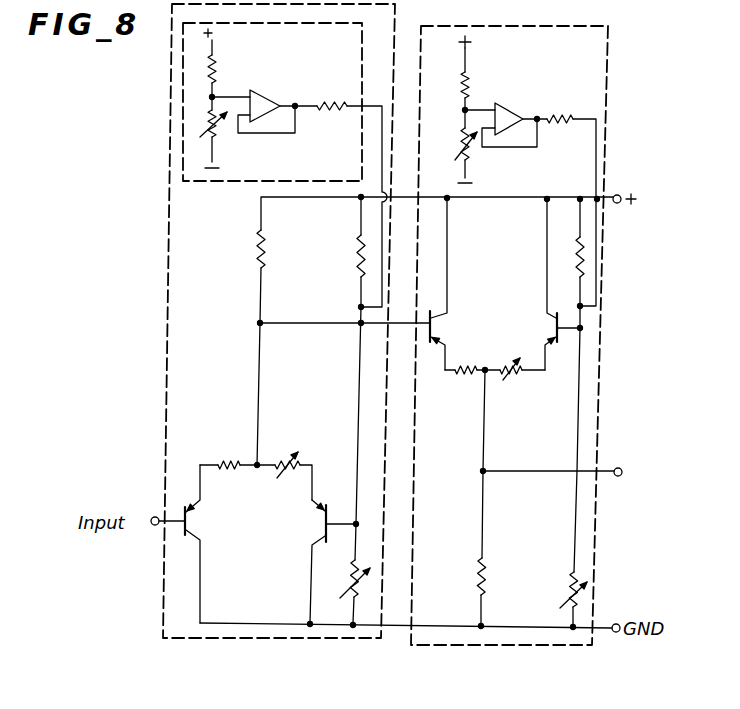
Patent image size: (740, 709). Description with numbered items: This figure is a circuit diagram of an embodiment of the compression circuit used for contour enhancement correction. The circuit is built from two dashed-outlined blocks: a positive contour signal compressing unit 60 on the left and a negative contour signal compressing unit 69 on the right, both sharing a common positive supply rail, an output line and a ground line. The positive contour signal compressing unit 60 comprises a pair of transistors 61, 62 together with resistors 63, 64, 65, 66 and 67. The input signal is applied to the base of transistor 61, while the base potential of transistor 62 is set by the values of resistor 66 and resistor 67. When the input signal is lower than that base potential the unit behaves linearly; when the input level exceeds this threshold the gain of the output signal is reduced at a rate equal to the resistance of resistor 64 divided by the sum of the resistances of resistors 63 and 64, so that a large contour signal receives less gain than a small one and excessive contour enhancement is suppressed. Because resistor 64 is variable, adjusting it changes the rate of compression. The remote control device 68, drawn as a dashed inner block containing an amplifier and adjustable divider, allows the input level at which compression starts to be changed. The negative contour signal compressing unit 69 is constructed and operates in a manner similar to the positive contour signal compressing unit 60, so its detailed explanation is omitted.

The positive contour signal compressing unit 60 is at (163, 612).
The transistor 61 is at (192, 522).
The transistor 62 is at (320, 524).
The resistor 63 is at (223, 462).
The variable resistor 64 is at (284, 462).
The resistor 65 is at (259, 251).
The resistor 66 is at (358, 257).
The resistor 67 is at (351, 579).
The remote control device 68 is at (182, 91).
The negative contour signal compressing unit 69 is at (410, 645).